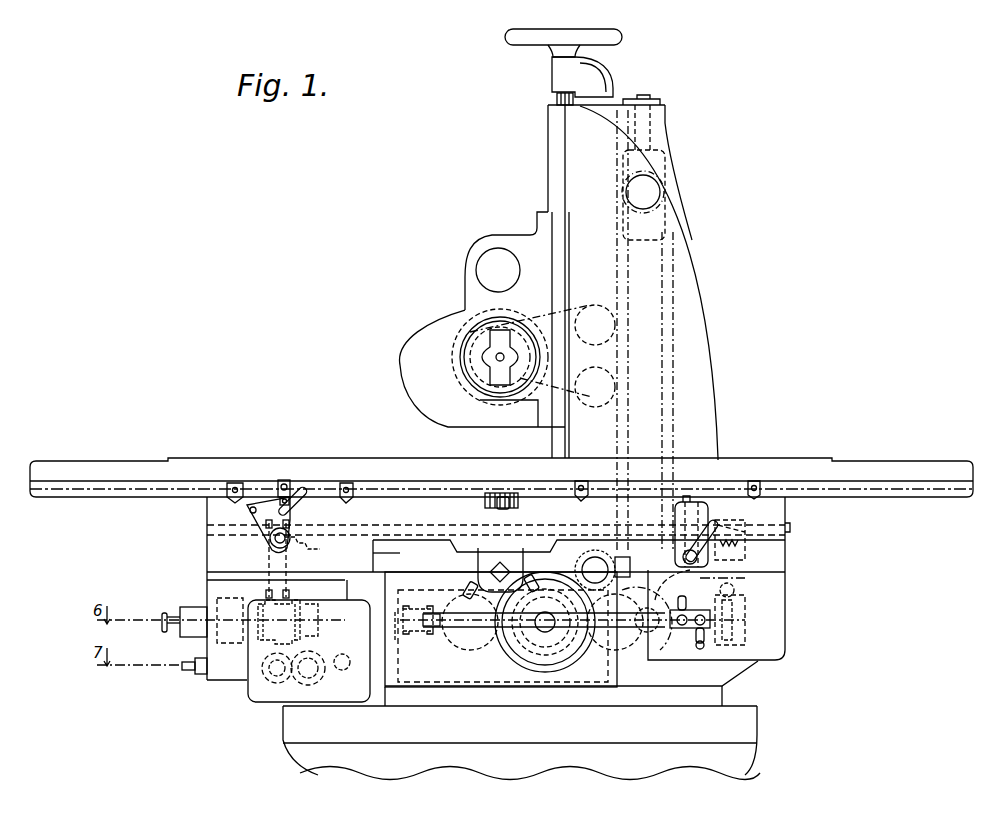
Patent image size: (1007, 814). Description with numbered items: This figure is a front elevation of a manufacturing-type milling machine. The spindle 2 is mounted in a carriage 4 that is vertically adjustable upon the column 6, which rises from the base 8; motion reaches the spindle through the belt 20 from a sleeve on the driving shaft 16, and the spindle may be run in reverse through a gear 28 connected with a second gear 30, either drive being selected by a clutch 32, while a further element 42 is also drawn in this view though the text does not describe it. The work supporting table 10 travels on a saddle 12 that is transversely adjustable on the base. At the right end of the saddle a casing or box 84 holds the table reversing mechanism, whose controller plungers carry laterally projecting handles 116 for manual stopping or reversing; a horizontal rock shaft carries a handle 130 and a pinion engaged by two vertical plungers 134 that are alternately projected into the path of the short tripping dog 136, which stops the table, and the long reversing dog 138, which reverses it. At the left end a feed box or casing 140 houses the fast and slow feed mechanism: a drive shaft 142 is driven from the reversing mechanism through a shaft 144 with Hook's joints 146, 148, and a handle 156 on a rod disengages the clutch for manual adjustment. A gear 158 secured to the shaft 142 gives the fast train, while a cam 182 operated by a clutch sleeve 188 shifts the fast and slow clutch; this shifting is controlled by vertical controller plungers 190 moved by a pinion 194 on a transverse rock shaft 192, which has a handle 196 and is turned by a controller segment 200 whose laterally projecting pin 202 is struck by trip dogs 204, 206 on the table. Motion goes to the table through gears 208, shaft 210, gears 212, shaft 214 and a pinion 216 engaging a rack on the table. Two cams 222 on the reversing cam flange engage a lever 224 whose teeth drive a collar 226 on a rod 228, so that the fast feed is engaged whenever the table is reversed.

The spindle 2 is at (497, 355).
The carriage 4 is at (468, 262).
The column 6 is at (707, 370).
The base 8 is at (715, 697).
The work supporting table 10 is at (795, 465).
The saddle 12 is at (217, 553).
The driving shaft 16 is at (636, 561).
The belt 20 is at (667, 405).
The gear 28 is at (681, 585).
The second gear 30 is at (530, 557).
The clutch 32 is at (743, 542).
The gear 42 is at (500, 650).
The casing or box 84 is at (778, 640).
The laterally projecting handles 116 is at (318, 604).
The handle 130 is at (692, 556).
The vertical plungers 134 is at (698, 501).
The tripping dog 136 is at (762, 495).
The tripping dog 138 is at (575, 487).
The feed box or casing 140 is at (253, 690).
The drive shaft 142 is at (440, 562).
The shaft 144 is at (503, 647).
The Hook's joint 146 is at (608, 643).
The Hook's joint 148 is at (427, 631).
The handle 156 is at (164, 614).
The gear 158 is at (315, 626).
The cam 182 is at (223, 630).
The clutch sleeve 188 is at (247, 678).
The vertical controller plungers 190 is at (289, 571).
The transverse rock shaft 192 is at (290, 538).
The pinion 194 is at (272, 548).
The handle 196 is at (310, 508).
The controller segment 200 is at (270, 505).
The laterally projecting pin 202 is at (290, 497).
The trip dog 204 is at (350, 487).
The trip dog 206 is at (282, 482).
The gears 208 is at (396, 613).
The shaft 210 is at (442, 591).
The gears 212 is at (467, 580).
The shaft 214 is at (487, 498).
The pinion 216 is at (500, 493).
The cams 222 is at (743, 629).
The lever 224 is at (745, 578).
The collar 226 is at (737, 537).
The rod 228 is at (578, 567).